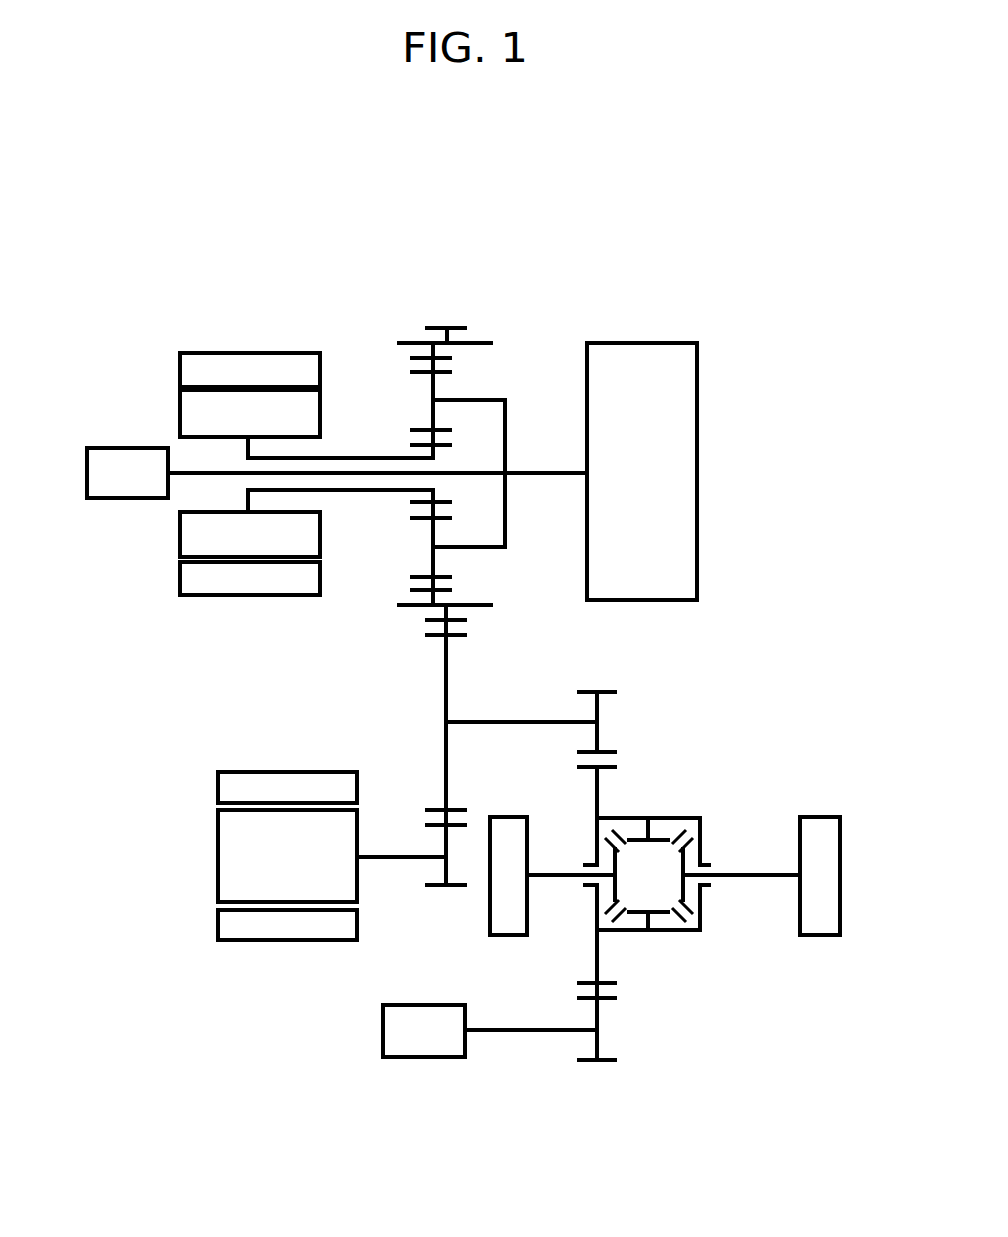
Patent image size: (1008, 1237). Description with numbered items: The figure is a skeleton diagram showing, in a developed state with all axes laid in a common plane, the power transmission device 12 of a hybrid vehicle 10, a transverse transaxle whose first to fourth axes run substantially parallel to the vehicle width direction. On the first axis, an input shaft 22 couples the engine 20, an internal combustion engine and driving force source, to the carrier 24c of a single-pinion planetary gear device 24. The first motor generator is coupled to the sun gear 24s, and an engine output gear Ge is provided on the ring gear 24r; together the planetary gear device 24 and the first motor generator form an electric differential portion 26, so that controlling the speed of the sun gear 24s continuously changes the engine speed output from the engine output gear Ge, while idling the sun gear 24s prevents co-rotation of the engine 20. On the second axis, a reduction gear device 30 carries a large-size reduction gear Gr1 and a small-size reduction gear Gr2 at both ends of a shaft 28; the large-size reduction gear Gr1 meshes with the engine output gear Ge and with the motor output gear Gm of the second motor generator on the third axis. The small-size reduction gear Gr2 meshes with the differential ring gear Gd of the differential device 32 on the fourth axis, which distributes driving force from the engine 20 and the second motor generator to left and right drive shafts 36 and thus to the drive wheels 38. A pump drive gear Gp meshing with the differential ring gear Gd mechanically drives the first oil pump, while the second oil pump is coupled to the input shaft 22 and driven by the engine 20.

The hybrid vehicle 10 is at (666, 192).
The power transmission device 12 is at (250, 225).
The engine 20 is at (683, 413).
The input shaft 22 is at (548, 478).
The planetary gear device 24 is at (350, 600).
The sun gear 24s is at (417, 443).
The carrier 24c is at (478, 396).
The ring gear 24r is at (448, 590).
The electric differential portion 26 is at (478, 264).
The shaft 28 is at (508, 727).
The reduction gear device 30 is at (684, 701).
The differential device 32 is at (695, 962).
The drive shafts 36 is at (553, 878).
The drive wheels 38 is at (507, 920).
The engine output gear Ge is at (438, 327).
The large-size reduction gear Gr1 is at (458, 633).
The small-size reduction gear Gr2 is at (602, 692).
The differential ring gear Gd is at (610, 768).
The motor output gear Gm is at (437, 887).
The pump drive gear Gp is at (590, 1062).